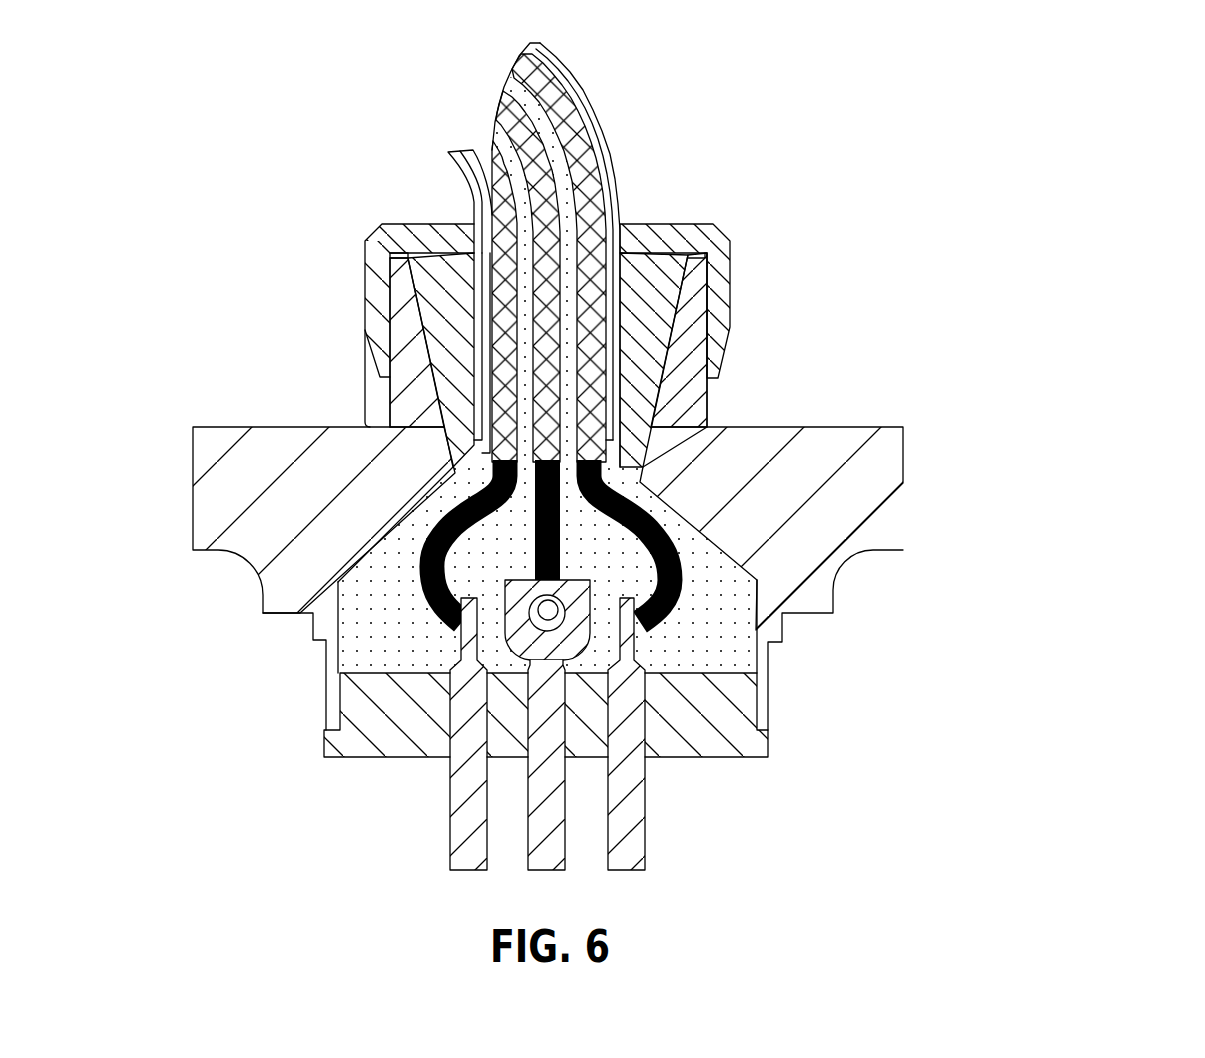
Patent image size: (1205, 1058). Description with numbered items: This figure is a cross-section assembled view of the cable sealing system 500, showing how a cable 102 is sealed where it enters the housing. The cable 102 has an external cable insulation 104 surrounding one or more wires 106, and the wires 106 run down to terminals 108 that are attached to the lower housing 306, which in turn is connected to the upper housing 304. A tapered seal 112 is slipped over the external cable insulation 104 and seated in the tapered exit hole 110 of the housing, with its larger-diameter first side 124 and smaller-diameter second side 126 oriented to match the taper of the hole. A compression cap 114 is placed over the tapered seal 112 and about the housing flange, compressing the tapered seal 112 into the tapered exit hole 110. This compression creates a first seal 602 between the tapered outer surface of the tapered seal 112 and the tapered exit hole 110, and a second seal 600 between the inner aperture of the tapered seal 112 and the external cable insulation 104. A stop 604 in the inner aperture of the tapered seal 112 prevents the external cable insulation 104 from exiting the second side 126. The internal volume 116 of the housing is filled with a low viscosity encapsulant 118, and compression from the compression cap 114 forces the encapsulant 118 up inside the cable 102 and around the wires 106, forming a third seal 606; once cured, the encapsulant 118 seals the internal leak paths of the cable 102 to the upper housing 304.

The sensor assembly 500 is at (1106, 97).
The cable 102 is at (590, 92).
The external cable insulation 104 is at (487, 206).
The wires 106 is at (586, 172).
The first side of the tapered seal 124 is at (670, 256).
The compression cap 114 is at (732, 258).
The second seal 600 is at (474, 282).
The first seal 602 is at (422, 331).
The tapered seal 112 is at (455, 373).
The stop 604 is at (457, 460).
The third seal 606 is at (567, 409).
The tapered exit hole 110 is at (678, 337).
The upper housing 304 is at (905, 452).
The second side of the tapered seal 126 is at (455, 476).
The internal volume 116 is at (702, 531).
The low viscosity encapsulant 118 is at (372, 648).
The terminals 108 is at (633, 645).
The lower housing 306 is at (772, 745).